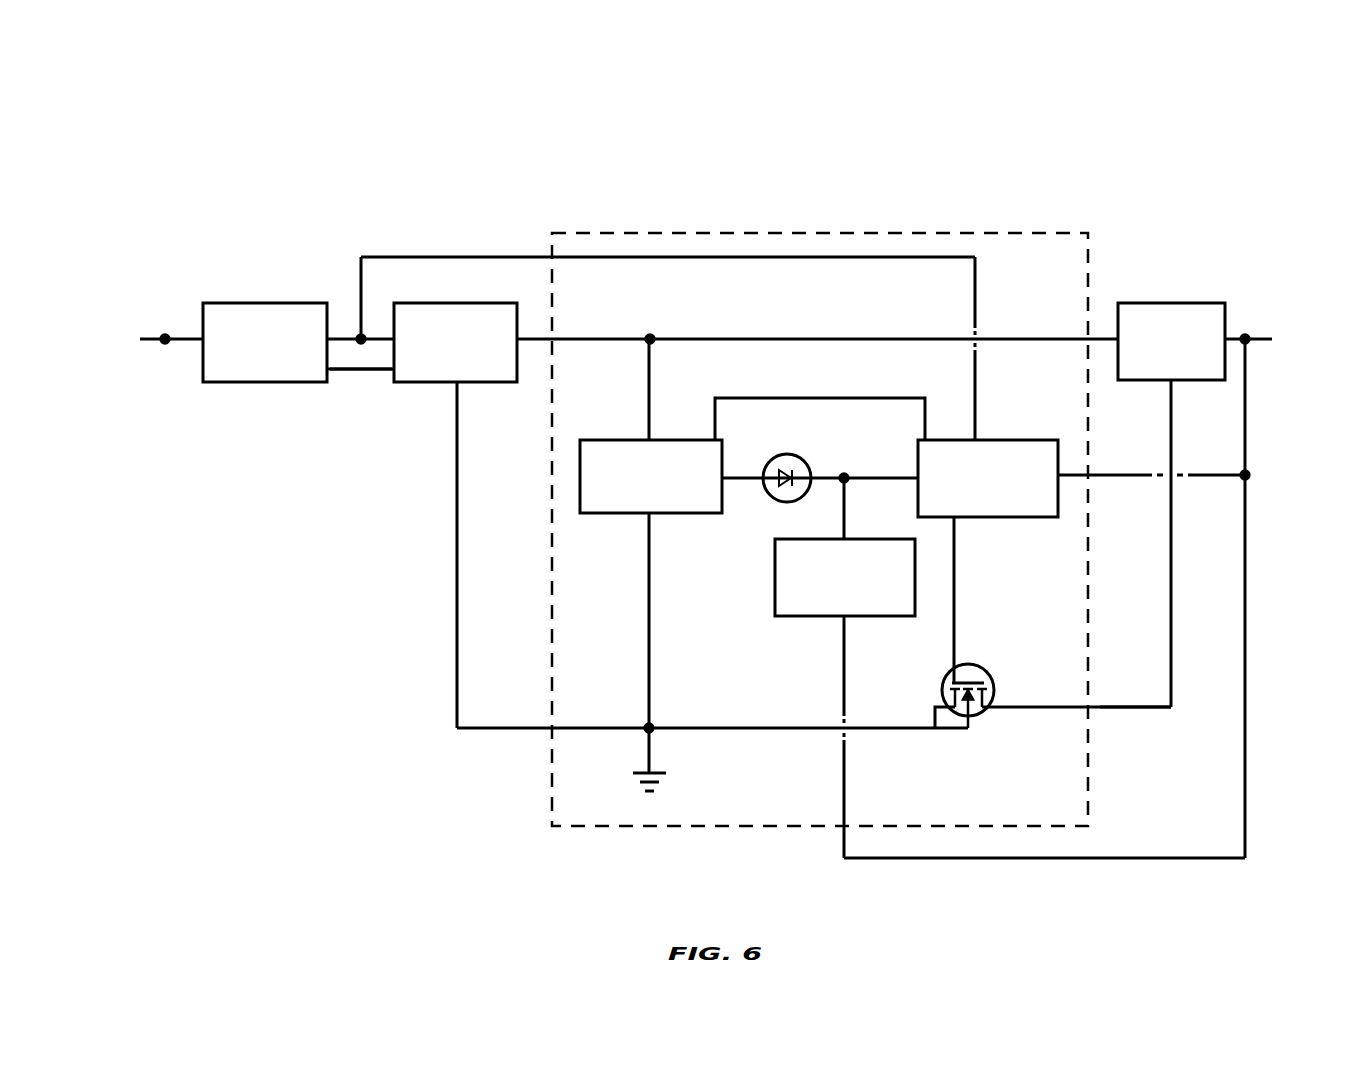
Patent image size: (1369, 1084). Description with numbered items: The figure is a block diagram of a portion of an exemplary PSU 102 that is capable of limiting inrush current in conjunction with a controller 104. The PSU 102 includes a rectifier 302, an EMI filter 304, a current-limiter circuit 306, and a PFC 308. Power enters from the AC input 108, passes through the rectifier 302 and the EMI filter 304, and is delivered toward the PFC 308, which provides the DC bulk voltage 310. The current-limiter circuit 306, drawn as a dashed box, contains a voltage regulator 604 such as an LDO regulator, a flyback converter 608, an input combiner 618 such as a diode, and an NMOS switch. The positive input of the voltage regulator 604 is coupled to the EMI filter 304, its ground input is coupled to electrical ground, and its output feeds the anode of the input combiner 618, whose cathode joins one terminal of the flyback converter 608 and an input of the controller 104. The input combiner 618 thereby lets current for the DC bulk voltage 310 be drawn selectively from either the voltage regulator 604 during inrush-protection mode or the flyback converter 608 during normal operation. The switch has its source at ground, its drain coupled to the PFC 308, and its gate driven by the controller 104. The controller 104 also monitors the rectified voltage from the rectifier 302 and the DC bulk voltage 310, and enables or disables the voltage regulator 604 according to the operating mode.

The PSU 102 is at (158, 136).
The AC input 108 is at (130, 349).
The rectifier 302 is at (265, 342).
The EMI filter 304 is at (455, 342).
The current-limiter circuit 306 is at (936, 233).
The voltage regulator 604 is at (651, 476).
The input combiner 618 is at (764, 492).
The flyback converter 608 is at (845, 547).
The controller 104 is at (988, 478).
The PFC 308 is at (1171, 341).
The DC bulk voltage 310 is at (1285, 581).